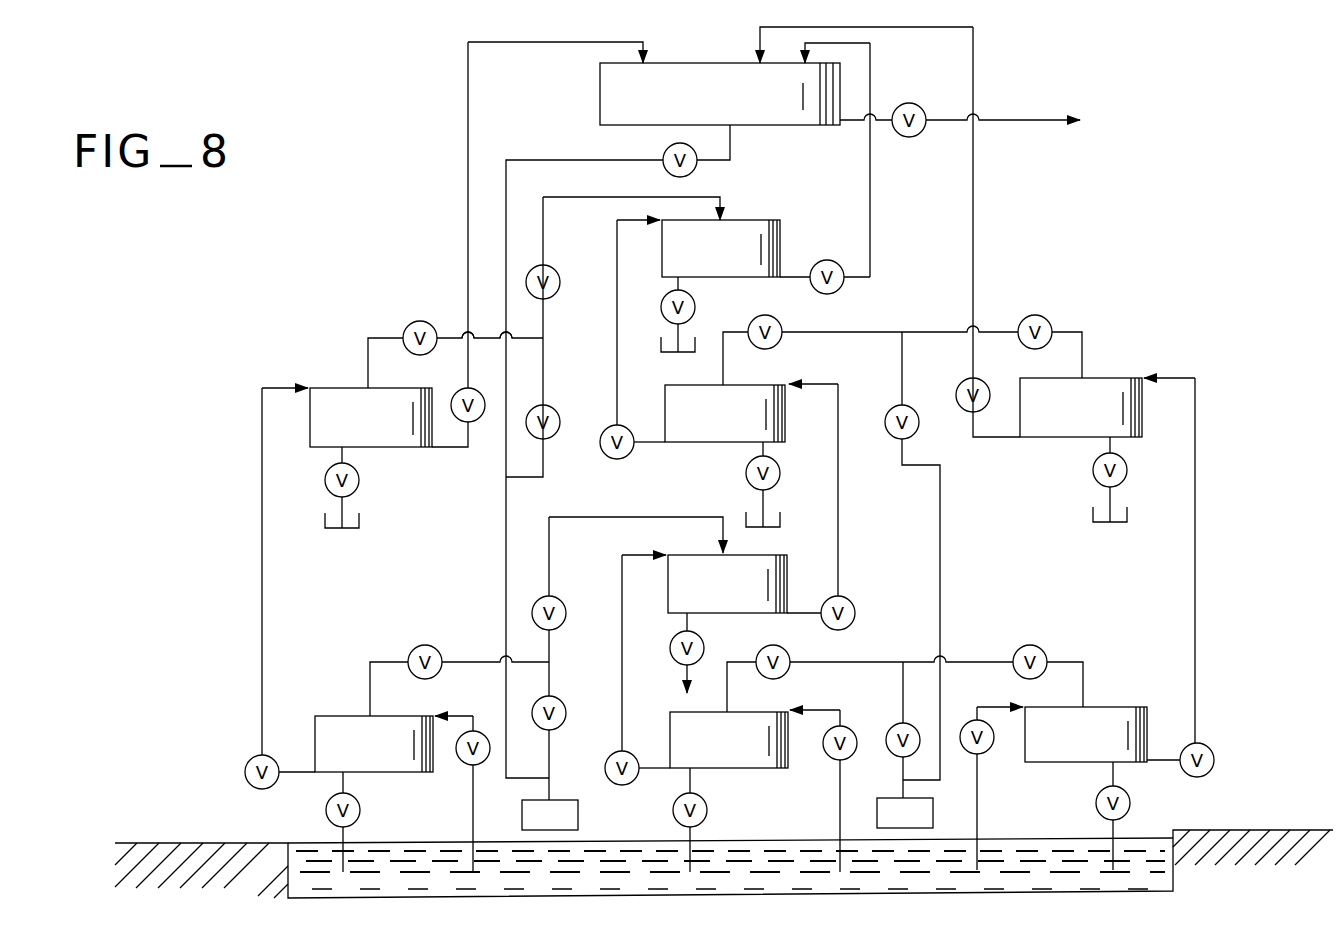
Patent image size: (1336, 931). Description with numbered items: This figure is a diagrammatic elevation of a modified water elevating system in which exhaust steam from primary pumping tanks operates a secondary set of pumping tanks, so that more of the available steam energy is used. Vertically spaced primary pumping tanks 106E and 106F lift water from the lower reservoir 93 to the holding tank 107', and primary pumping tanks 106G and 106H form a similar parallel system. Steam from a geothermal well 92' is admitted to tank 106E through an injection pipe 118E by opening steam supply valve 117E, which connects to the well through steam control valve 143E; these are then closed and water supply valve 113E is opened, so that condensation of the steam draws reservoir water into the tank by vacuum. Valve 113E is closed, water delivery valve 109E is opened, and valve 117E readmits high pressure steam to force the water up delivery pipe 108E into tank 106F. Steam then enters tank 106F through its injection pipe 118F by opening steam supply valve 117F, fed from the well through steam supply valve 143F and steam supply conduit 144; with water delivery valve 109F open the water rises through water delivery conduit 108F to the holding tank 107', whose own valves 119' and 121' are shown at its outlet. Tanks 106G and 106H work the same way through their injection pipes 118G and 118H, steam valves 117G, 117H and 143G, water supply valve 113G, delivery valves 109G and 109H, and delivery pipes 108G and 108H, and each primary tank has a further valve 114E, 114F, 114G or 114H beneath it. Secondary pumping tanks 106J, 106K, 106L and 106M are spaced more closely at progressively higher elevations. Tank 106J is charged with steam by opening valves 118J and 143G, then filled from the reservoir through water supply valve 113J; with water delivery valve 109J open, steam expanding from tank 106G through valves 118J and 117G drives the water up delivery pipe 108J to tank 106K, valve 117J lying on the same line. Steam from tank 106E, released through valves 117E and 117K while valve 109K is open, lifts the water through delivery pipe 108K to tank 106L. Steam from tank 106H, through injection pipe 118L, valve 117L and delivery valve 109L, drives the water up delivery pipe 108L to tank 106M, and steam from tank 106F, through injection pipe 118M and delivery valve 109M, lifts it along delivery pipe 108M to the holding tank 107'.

The holding tank 107' is at (720, 94).
The valve 119' is at (717, 159).
The outlet valve 121' is at (960, 94).
The water delivery conduit 108F is at (468, 199).
The supply line 108M is at (880, 193).
The supply line 108H is at (977, 262).
The supply line 108L is at (617, 243).
The delivery pipe 108K is at (840, 512).
The delivery pipe 108J is at (622, 662).
The delivery pipe 108E is at (260, 624).
The supply line 108G is at (1200, 697).
The secondary pumping tank 106M is at (745, 260).
The secondary pumping tank 106L is at (685, 425).
The secondary pumping tank 106K is at (745, 598).
The secondary pumping tank 106J is at (758, 747).
The pumping tank 106F is at (400, 422).
The pumping tank 106E is at (344, 755).
The pumping tank 106H is at (1100, 418).
The pumping tank 106G is at (1048, 743).
The valve 118M is at (556, 290).
The conduit 118F is at (366, 360).
The conduit 118L is at (748, 332).
The conduit 118H is at (1085, 350).
The valve 118J is at (740, 662).
The injection pipe 118E is at (368, 693).
The conduit 118G is at (1085, 676).
The valve 109M is at (838, 288).
The water delivery valve 109F is at (478, 420).
The valve 109L is at (624, 460).
The valve 109H is at (957, 395).
The valve 109K is at (856, 612).
The water delivery valve 109J is at (606, 768).
The water delivery valve 109E is at (248, 763).
The valve 109G is at (1216, 755).
The steam supply valve 117F is at (413, 322).
The valve 117L is at (779, 343).
The valve 117H is at (1050, 305).
The valve 117K is at (563, 600).
The valve 117J is at (786, 677).
The steam supply valve 117E is at (420, 648).
The valve 117G is at (1028, 645).
The steam supply valve 143F is at (560, 400).
The steam control valve 143E is at (578, 697).
The valve 143G is at (883, 730).
The steam supply conduit 144 is at (506, 556).
The drain valve 114F is at (360, 488).
The drain valve 114H is at (1093, 480).
The drain valve 114E is at (326, 812).
The drain valve 114G is at (1131, 803).
The water supply valve 113J is at (826, 757).
The valve 113G is at (988, 755).
The water supply valve 113E is at (464, 767).
The geothermal well 92' is at (750, 814).
The lower reservoir 93 is at (1175, 859).